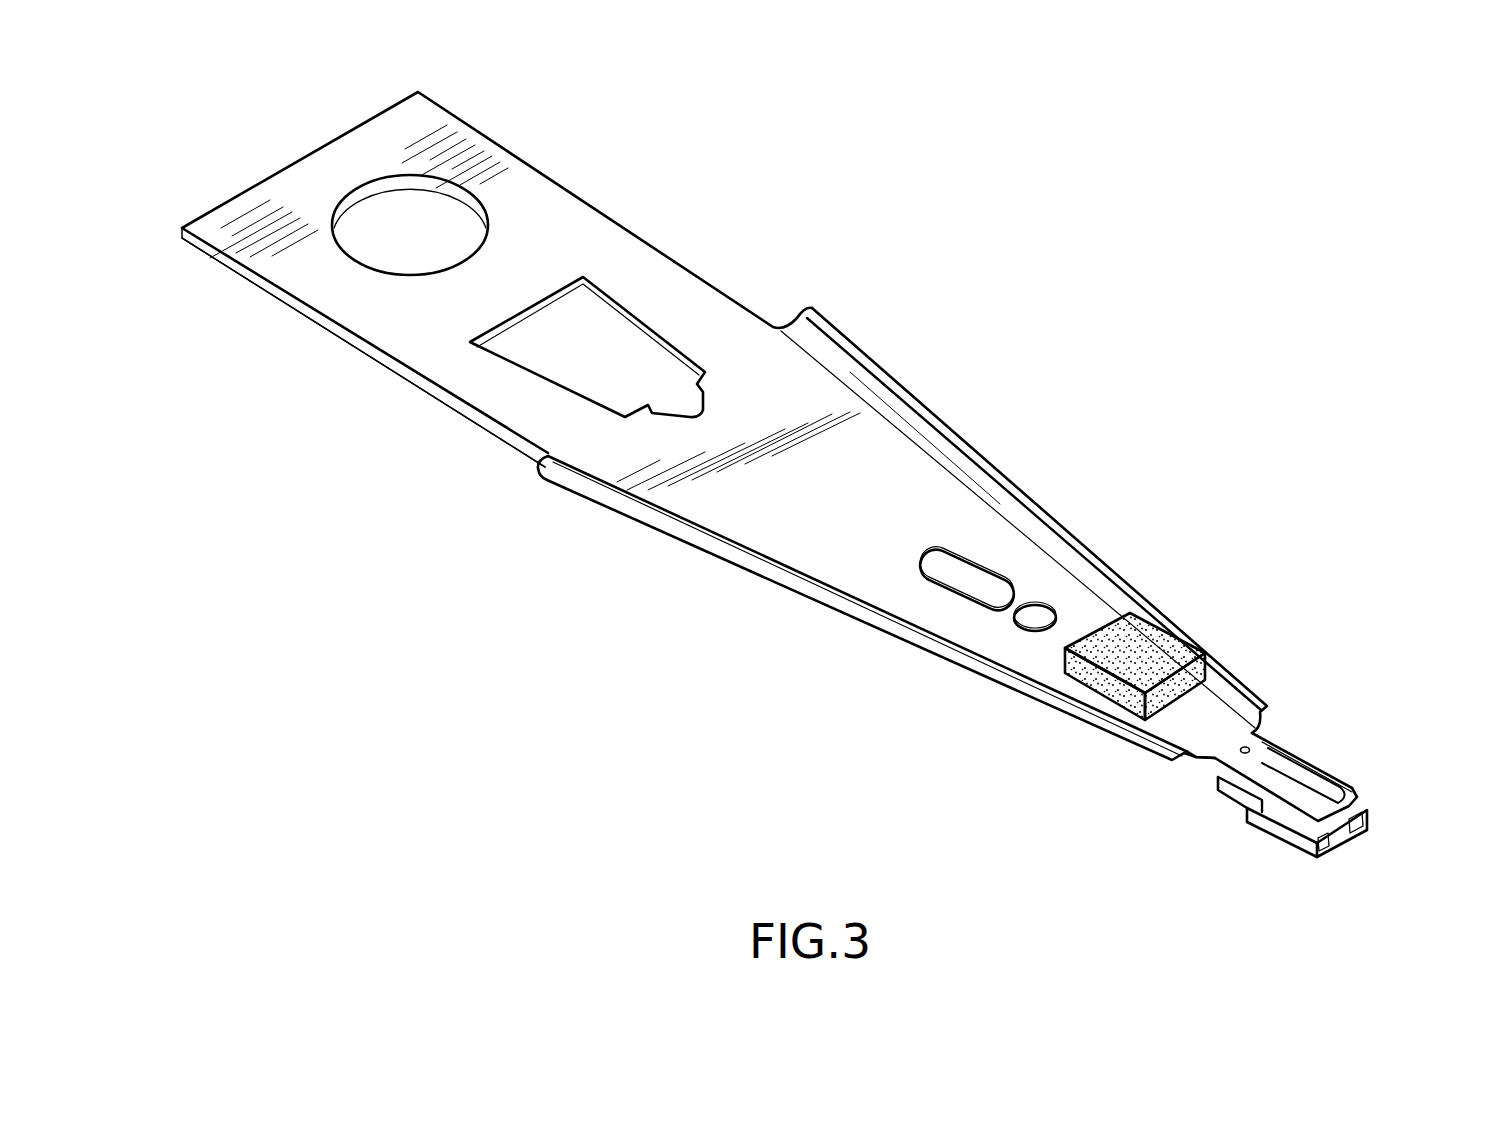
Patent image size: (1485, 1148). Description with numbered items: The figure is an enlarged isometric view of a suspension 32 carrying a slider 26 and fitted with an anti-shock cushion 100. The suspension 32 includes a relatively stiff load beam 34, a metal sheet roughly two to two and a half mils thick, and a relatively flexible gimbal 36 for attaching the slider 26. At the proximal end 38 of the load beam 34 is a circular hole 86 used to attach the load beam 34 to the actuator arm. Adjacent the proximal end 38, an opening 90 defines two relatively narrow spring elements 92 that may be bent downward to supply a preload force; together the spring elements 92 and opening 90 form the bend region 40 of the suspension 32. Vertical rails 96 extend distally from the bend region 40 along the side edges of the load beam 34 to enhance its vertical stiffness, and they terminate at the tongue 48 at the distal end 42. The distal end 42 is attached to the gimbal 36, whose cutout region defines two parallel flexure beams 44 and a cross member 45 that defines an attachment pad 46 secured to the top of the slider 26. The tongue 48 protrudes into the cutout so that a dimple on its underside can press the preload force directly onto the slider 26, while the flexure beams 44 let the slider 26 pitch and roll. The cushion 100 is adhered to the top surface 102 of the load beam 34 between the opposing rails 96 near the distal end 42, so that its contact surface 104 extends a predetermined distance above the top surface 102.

The slider 26 is at (1303, 840).
The suspension 32 is at (1168, 316).
The load beam 34 is at (813, 557).
The gimbal 36 is at (1283, 745).
The proximal end 38 is at (517, 170).
The bend region 40 is at (710, 316).
The distal end 42 is at (1202, 737).
The flexure beams 44 is at (1343, 763).
The cross member 45 is at (1355, 796).
The attachment pad 46 is at (1340, 814).
The tongue 48 is at (1267, 767).
The circular hole 86 is at (352, 250).
The opening 90 is at (500, 357).
The spring elements 92 is at (660, 275).
The vertical rails 96 is at (1023, 488).
The anti-shock cushion 100 is at (1186, 649).
The top surface 102 is at (840, 507).
The contact surface 104 is at (1133, 623).